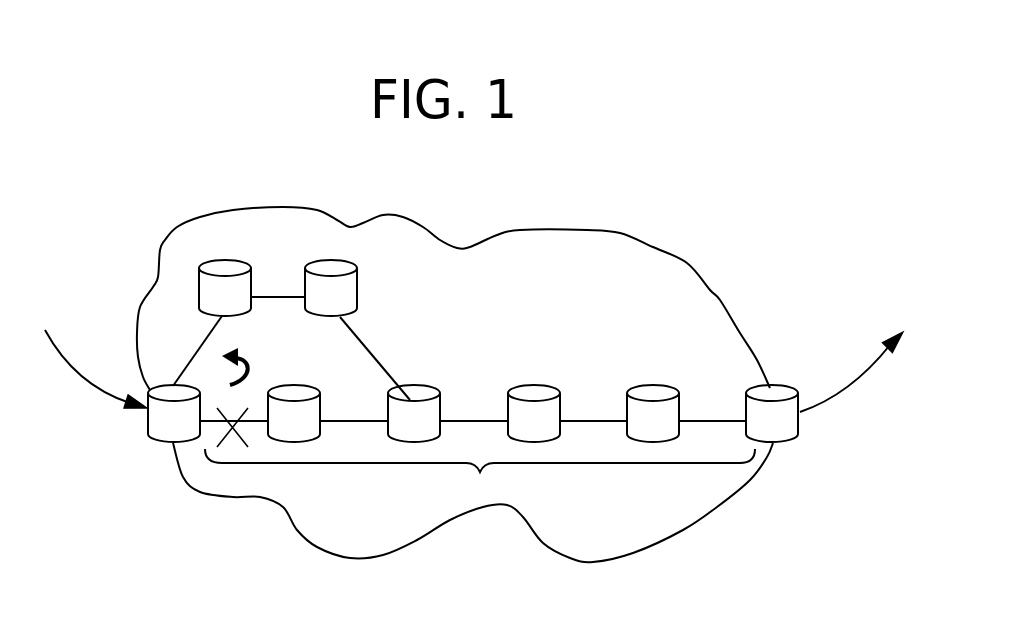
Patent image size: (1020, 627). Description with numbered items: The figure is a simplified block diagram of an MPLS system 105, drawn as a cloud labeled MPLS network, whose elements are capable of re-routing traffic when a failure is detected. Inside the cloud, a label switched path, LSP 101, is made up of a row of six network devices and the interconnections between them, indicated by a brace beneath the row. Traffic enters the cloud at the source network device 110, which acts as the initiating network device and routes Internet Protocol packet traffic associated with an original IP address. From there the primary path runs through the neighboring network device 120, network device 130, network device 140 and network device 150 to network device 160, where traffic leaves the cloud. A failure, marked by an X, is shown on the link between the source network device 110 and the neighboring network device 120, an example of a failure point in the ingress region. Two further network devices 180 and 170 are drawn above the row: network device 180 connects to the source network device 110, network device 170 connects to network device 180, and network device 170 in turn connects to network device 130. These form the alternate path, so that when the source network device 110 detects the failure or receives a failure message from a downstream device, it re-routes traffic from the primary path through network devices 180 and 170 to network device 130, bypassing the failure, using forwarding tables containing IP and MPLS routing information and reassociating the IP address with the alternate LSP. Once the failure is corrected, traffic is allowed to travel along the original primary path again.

The LSP 101 is at (477, 490).
The MPLS system 105 is at (462, 228).
The source network device 110 is at (157, 385).
The neighboring network device 120 is at (284, 384).
The network device 130 is at (435, 387).
The network device 140 is at (518, 387).
The network device 150 is at (647, 385).
The network device 160 is at (806, 385).
The network device 170 is at (333, 260).
The network device 180 is at (235, 260).